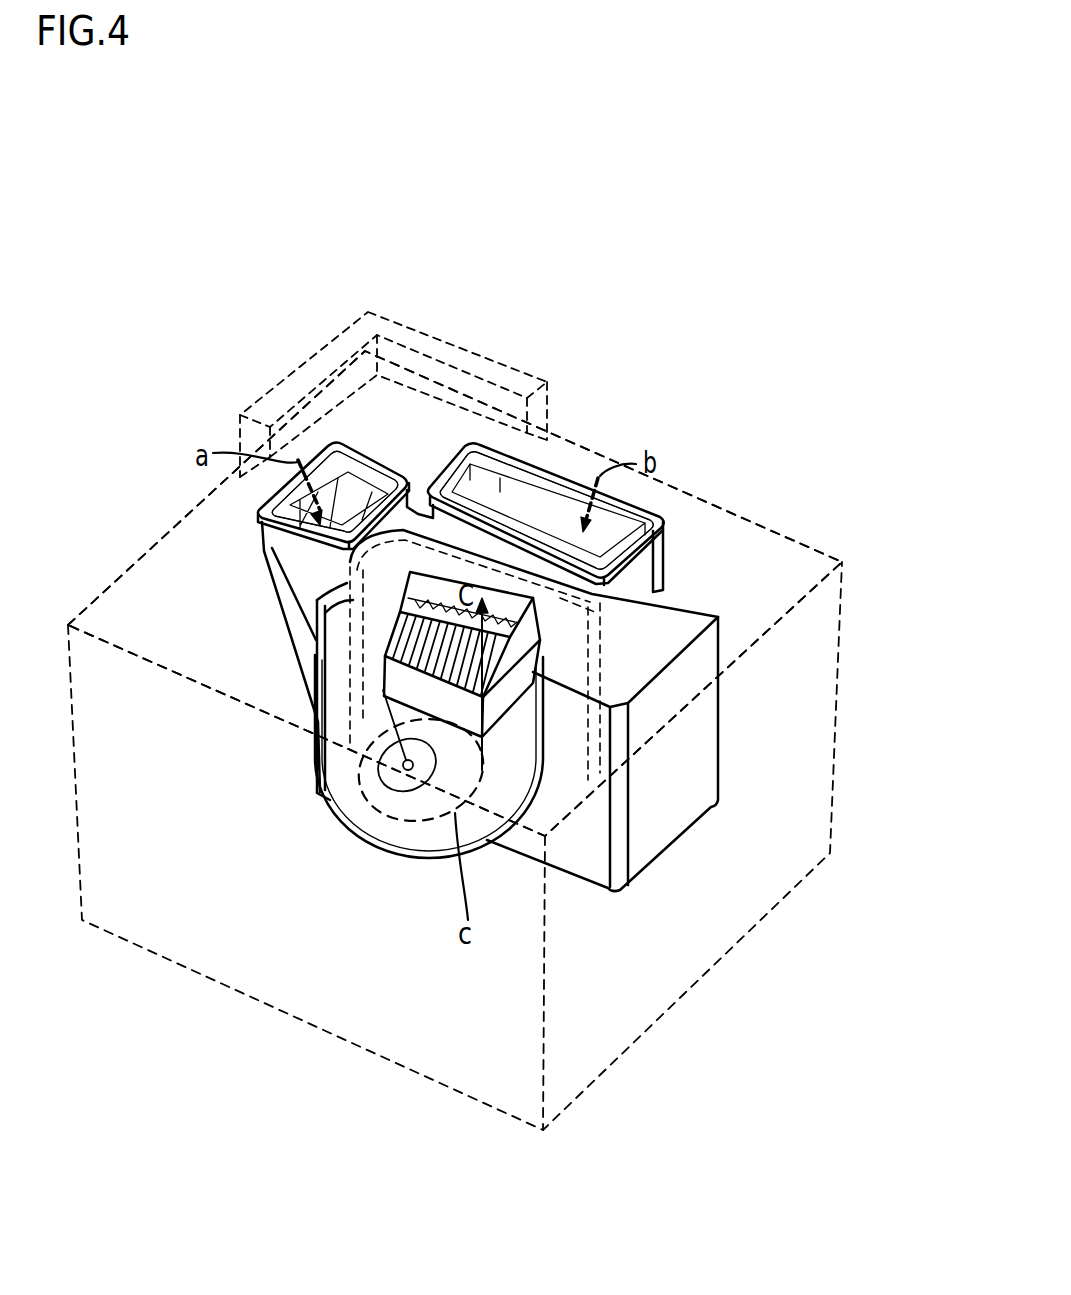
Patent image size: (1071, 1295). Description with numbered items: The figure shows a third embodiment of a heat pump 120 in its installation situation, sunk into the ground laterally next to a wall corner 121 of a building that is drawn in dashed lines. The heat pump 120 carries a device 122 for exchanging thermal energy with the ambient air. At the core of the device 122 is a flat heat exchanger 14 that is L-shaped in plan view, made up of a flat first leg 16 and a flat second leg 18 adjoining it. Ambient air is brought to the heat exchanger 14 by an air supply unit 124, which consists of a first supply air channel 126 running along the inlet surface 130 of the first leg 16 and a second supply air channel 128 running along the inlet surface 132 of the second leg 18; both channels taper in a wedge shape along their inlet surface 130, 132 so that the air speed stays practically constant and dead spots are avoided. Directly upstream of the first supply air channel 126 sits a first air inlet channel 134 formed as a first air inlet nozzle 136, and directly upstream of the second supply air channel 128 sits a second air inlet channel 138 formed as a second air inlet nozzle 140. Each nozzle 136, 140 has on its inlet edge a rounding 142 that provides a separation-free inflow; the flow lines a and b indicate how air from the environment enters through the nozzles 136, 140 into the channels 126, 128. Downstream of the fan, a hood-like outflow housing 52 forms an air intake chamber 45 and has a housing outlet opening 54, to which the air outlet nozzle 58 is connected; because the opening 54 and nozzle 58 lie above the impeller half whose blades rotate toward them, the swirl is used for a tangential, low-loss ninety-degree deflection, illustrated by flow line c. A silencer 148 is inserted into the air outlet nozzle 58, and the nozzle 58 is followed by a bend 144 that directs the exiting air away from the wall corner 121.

The heat exchanger 14 is at (615, 652).
The first leg 16 is at (597, 673).
The second leg 18 is at (357, 603).
The air intake chamber 45 is at (381, 832).
The outflow housing 52 is at (425, 773).
The housing outlet opening 54 is at (401, 692).
The air outlet nozzle 58 is at (407, 682).
The heat pump 120 is at (546, 296).
The wall corner 121 is at (376, 358).
The device for exchanging thermal energy with the ambient air 122 is at (722, 588).
The air supply unit 124 is at (419, 440).
The first supply air channel 126 is at (547, 520).
The second supply air channel 128 is at (345, 505).
The inlet surface 130 is at (600, 625).
The inlet surface 132 is at (350, 597).
The first air inlet channel 134 is at (655, 555).
The first air inlet nozzle 136 is at (543, 530).
The second air inlet channel 138 is at (273, 542).
The second air inlet nozzle 140 is at (287, 503).
The rounding 142 is at (318, 478).
The bend 144 is at (563, 690).
The silencer 148 is at (385, 660).